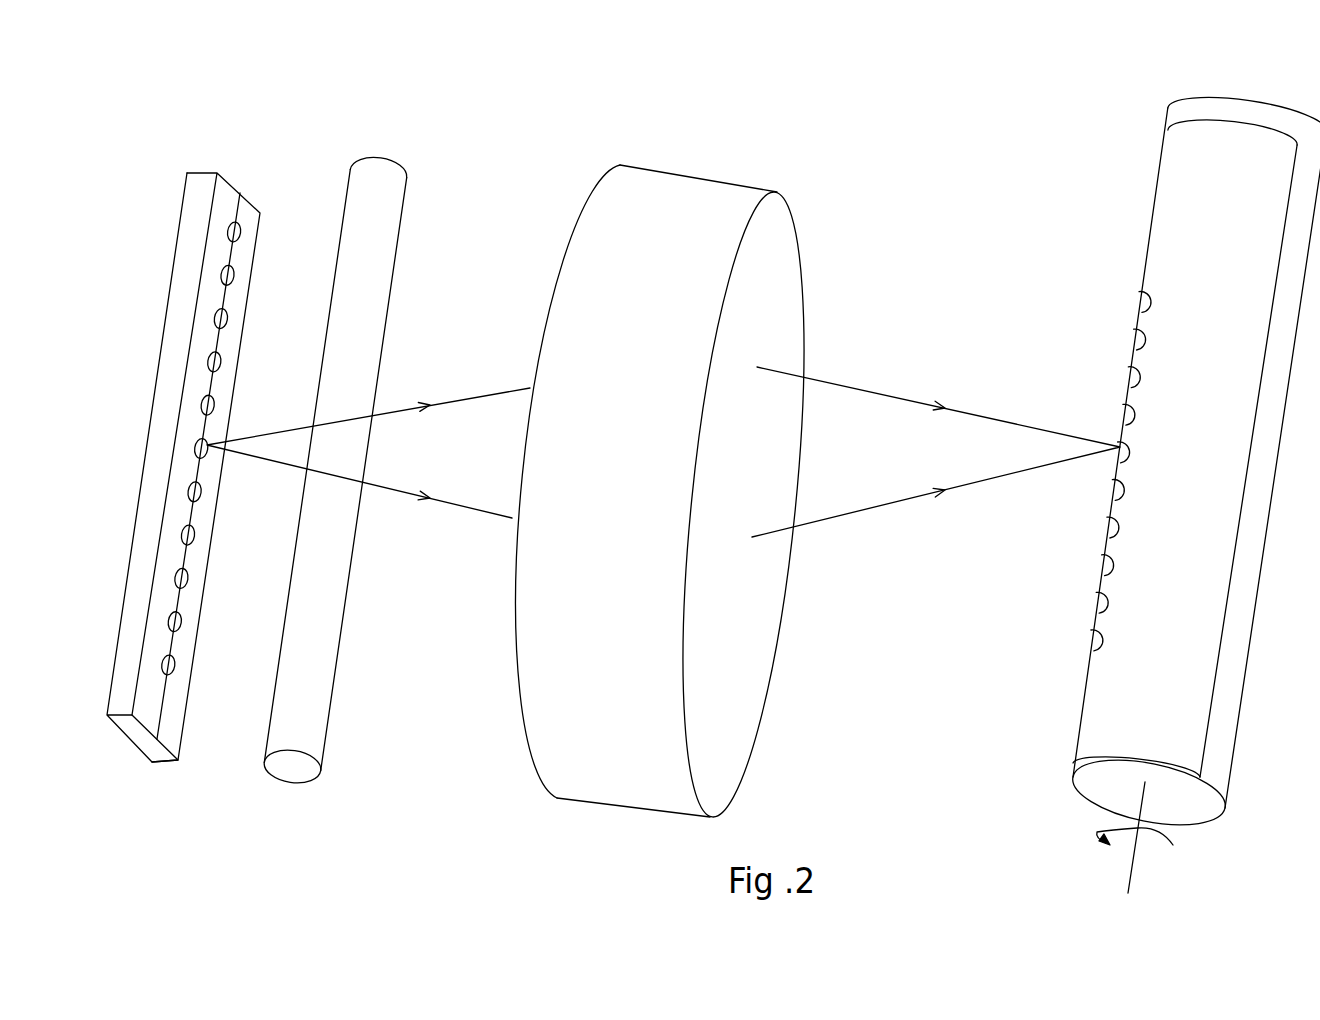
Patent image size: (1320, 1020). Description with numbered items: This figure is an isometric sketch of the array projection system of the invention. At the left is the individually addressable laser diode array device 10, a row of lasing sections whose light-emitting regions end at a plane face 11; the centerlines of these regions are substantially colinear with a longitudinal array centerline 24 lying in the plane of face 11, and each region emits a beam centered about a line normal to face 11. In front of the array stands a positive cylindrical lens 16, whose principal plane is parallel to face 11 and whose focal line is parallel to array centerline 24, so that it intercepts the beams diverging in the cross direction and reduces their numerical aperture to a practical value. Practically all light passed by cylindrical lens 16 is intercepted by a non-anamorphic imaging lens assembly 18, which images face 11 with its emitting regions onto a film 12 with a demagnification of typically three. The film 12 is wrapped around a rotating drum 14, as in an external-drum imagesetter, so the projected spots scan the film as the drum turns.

The individually addressable laser diode array device 10 is at (227, 178).
The plane face 11 is at (222, 225).
The longitudinal array centerline 24 is at (232, 235).
The positive cylindrical lens 16 is at (388, 158).
The non-anamorphic imaging lens assembly 18 is at (687, 207).
The rotating drum 14 is at (1253, 123).
The film 12 is at (1170, 188).